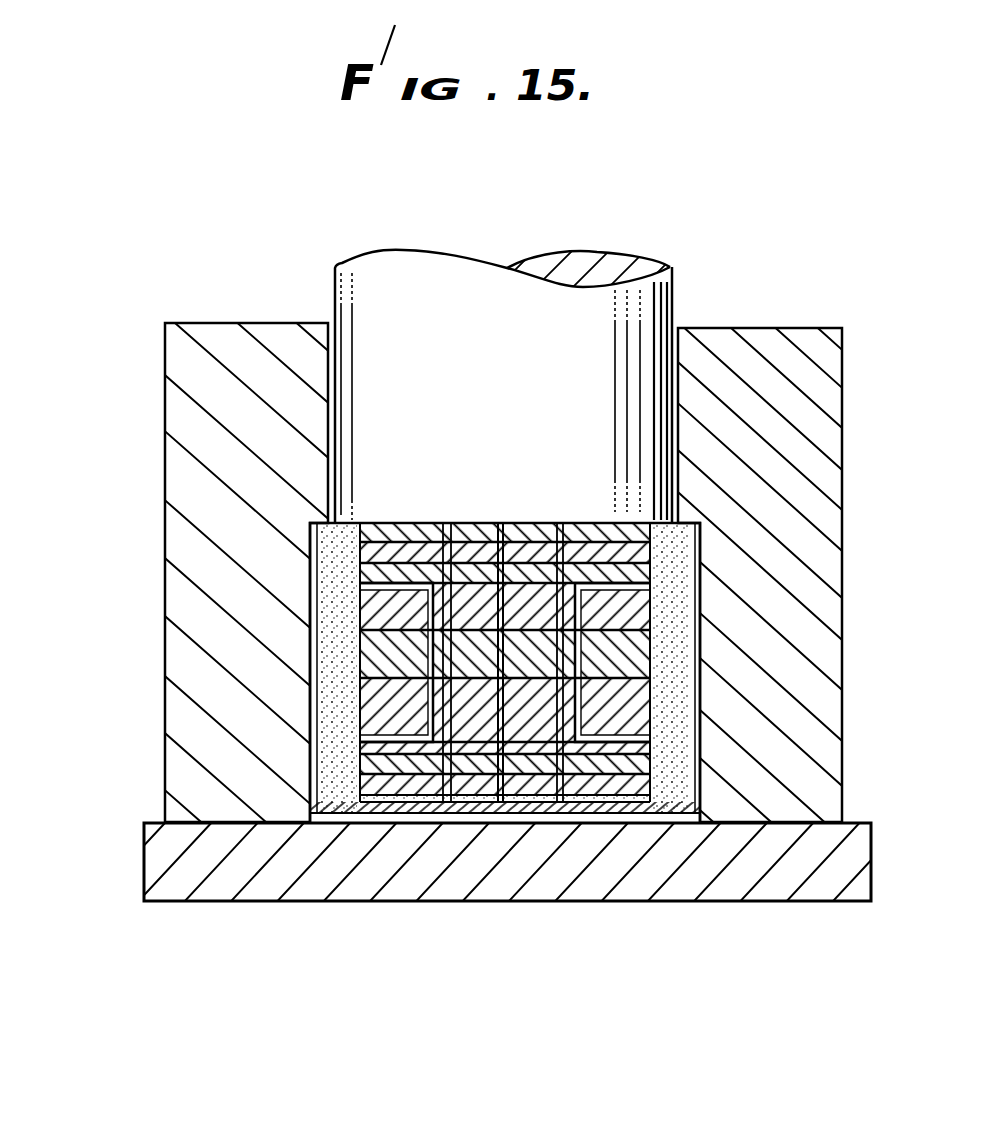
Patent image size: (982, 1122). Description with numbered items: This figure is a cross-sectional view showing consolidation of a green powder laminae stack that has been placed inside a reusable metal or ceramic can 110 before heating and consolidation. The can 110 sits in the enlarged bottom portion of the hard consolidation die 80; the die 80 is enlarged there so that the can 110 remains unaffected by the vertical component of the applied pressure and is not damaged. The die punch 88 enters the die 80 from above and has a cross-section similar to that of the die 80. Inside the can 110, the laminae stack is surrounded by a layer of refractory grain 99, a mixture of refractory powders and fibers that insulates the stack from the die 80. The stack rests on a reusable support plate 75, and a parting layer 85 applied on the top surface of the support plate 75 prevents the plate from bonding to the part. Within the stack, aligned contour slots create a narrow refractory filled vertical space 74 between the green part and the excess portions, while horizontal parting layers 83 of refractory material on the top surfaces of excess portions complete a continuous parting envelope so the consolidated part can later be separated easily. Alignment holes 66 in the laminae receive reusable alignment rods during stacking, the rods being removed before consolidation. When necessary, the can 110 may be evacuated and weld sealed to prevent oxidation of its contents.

The alignment holes 66 is at (492, 578).
The refractory filled vertical space 74 is at (668, 647).
The support plate 75 is at (617, 812).
The consolidation die 80 is at (182, 369).
The horizontal parting layers 83 is at (392, 730).
The parting layer 85 is at (378, 795).
The die punch 88 is at (385, 287).
The layer of refractory grain 99 is at (333, 578).
The can 110 is at (705, 553).